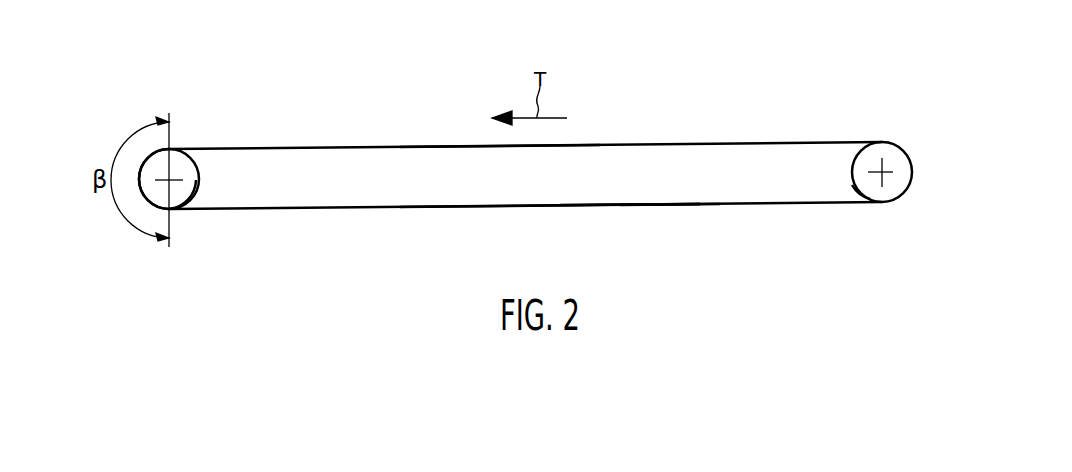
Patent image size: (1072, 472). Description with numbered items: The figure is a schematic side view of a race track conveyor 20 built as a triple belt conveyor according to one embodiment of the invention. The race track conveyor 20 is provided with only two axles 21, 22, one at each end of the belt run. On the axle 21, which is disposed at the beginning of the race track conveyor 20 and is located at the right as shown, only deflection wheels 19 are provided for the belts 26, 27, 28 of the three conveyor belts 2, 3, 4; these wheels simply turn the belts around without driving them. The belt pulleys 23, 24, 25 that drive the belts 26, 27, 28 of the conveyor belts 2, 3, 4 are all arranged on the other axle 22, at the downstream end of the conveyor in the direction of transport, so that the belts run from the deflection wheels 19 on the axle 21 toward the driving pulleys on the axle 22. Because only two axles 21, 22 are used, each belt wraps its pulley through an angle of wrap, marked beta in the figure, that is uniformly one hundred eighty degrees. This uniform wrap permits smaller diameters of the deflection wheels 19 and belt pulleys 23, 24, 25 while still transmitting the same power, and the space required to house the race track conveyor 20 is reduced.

The conveyor belt 2 is at (652, 139).
The conveyor belt 3 is at (500, 146).
The conveyor belt 4 is at (500, 206).
The deflection wheel 19 is at (851, 184).
The race track conveyor 20 is at (913, 143).
The axle 21 is at (883, 173).
The axle 22 is at (169, 179).
The belt pulley 23 is at (195, 187).
The belt pulley 24 is at (154, 194).
The belt pulley 25 is at (154, 164).
The belt 26 is at (618, 206).
The belt 27 is at (650, 204).
The belt 28 is at (670, 204).